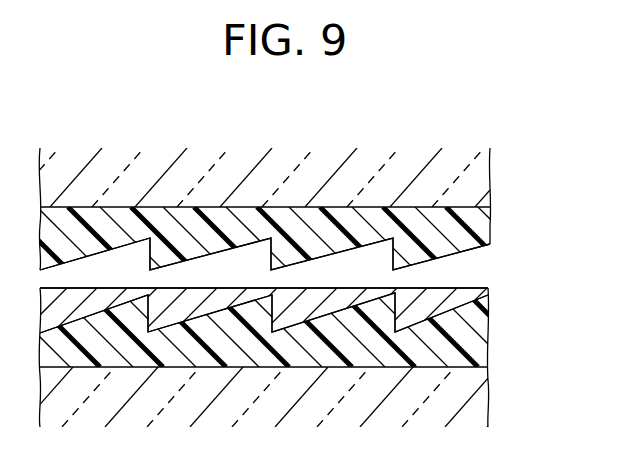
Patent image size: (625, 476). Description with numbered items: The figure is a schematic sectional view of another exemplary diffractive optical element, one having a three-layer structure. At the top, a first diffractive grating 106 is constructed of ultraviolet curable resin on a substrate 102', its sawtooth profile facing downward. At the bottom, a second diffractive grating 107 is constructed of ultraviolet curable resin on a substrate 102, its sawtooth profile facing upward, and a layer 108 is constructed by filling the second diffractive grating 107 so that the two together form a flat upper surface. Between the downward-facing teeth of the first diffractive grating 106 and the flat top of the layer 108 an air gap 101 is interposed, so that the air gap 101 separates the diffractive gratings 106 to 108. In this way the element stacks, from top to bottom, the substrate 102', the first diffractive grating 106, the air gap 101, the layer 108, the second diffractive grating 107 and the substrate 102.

The substrate 102' is at (293, 209).
The first diffractive grating 106 is at (486, 219).
The air gap 101 is at (482, 262).
The layer 108 is at (480, 296).
The second diffractive grating 107 is at (482, 343).
The substrate 102 is at (291, 357).